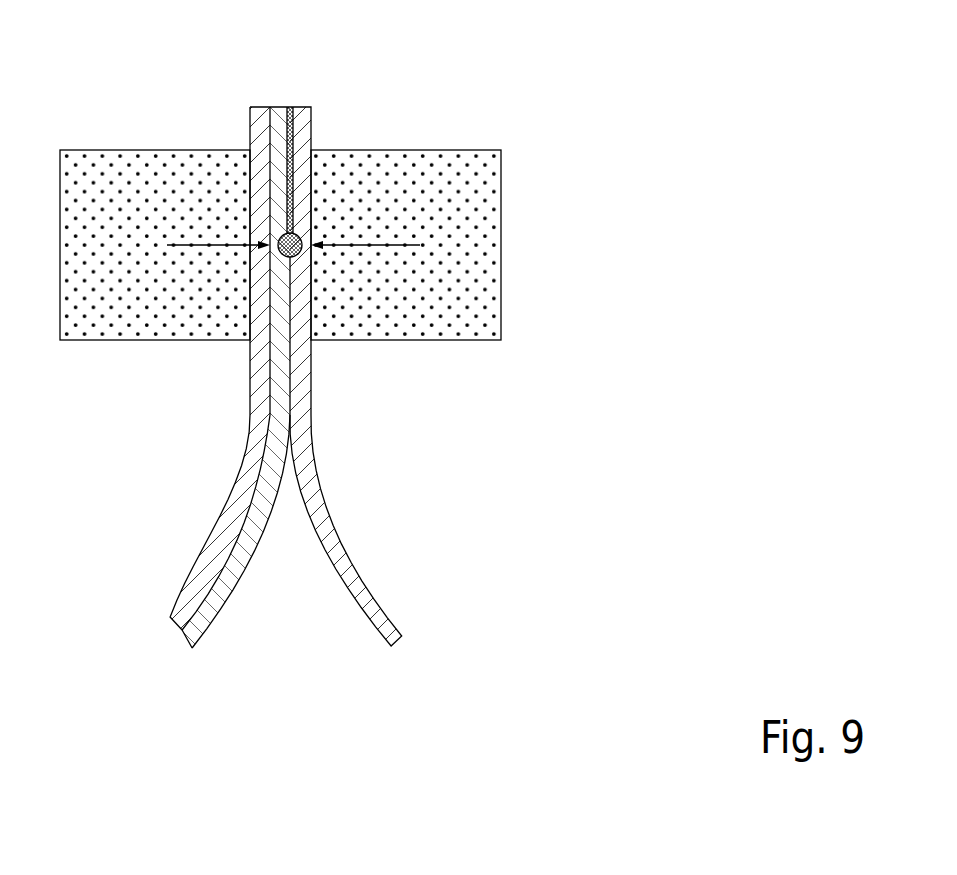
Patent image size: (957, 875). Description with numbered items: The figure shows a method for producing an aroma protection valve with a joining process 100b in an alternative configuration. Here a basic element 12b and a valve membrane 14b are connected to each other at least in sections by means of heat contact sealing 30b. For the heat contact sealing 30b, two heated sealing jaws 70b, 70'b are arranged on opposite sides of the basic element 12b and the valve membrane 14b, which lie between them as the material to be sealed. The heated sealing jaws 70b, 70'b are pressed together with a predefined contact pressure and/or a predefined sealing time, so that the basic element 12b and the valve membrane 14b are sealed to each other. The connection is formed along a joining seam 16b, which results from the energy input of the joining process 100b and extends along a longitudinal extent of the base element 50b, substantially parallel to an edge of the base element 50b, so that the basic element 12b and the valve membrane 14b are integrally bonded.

The joining process 100b is at (605, 202).
The heat contact sealing 30b is at (610, 261).
The heated sealing jaw 70'b is at (155, 189).
The heated sealing jaw 70b is at (462, 180).
The joining seam 16b is at (290, 128).
The base element 50b is at (237, 533).
The basic element 12b is at (210, 617).
The valve membrane 14b is at (323, 530).